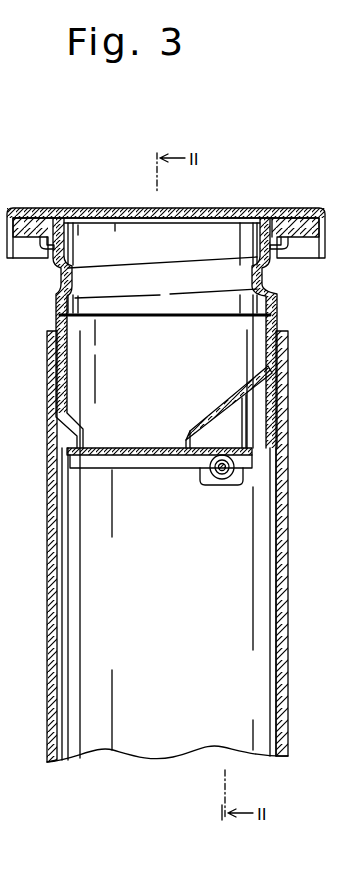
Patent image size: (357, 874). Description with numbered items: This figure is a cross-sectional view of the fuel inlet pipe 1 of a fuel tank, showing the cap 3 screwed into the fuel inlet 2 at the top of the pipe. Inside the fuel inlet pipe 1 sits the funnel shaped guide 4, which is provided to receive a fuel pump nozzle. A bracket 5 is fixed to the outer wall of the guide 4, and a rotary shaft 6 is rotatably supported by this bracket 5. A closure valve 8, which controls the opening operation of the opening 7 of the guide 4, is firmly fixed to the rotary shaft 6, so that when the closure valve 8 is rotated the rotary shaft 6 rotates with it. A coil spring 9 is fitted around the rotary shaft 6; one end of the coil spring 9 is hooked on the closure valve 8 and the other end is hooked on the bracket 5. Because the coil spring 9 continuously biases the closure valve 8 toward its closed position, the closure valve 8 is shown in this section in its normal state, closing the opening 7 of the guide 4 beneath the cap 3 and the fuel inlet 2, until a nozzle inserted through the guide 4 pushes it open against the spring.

The fuel inlet pipe 1 is at (287, 560).
The fuel inlet 2 is at (248, 332).
The cap 3 is at (228, 208).
The funnel shaped guide 4 is at (222, 406).
The bracket 5 is at (236, 428).
The rotary shaft 6 is at (246, 477).
The opening 7 is at (112, 447).
The closure valve 8 is at (149, 447).
The coil spring 9 is at (201, 481).